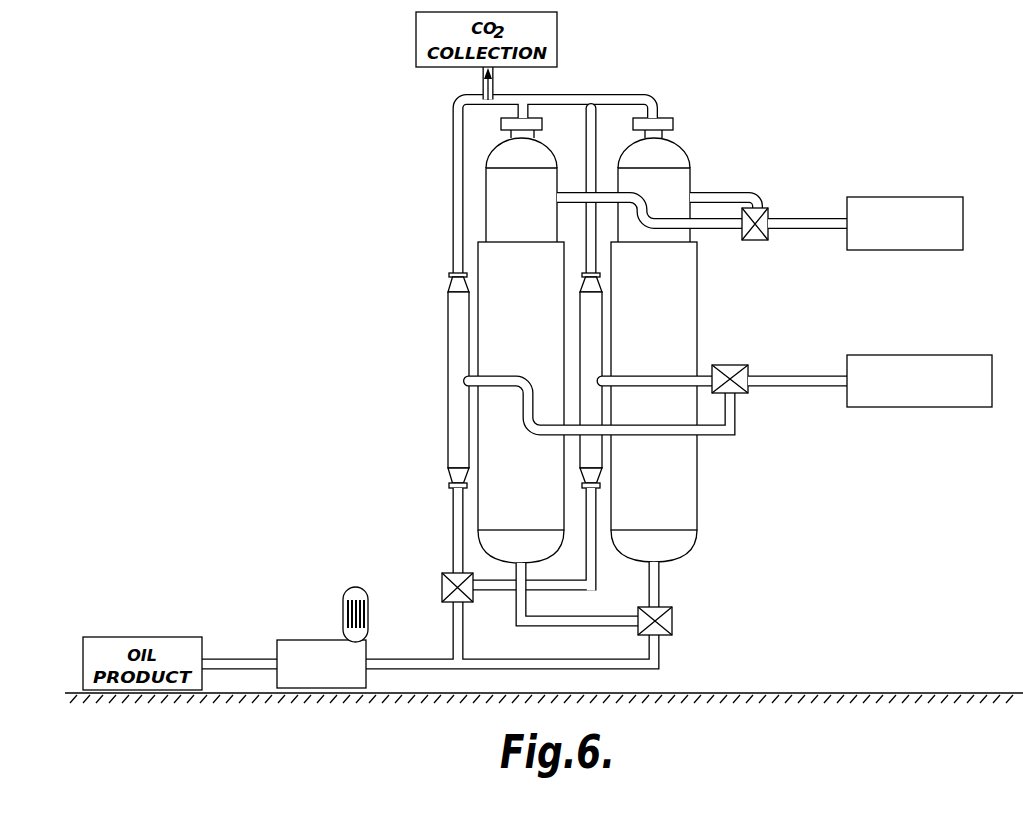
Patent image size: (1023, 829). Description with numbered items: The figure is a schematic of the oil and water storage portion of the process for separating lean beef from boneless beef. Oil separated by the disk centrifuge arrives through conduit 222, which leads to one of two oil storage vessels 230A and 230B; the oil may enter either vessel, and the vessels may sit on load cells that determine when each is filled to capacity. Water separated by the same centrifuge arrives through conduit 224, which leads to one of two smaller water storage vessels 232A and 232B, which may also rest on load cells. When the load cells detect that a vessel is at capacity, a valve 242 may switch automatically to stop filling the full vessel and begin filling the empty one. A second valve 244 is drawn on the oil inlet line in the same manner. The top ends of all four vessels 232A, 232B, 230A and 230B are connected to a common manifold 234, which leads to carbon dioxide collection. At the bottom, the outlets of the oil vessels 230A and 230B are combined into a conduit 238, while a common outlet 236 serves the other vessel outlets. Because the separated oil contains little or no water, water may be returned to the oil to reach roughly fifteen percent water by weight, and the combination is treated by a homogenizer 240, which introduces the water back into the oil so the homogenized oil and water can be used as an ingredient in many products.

The conduit 222 is at (808, 212).
The conduit 224 is at (797, 372).
The oil storage vessel 230A is at (697, 287).
The oil storage vessel 230B is at (480, 260).
The water storage vessel 232A is at (598, 302).
The water storage vessel 232B is at (449, 331).
The common manifold 234 is at (607, 95).
The common outlet 236 is at (465, 633).
The conduit 238 is at (662, 647).
The homogenizer 240 is at (312, 640).
The valve 242 is at (730, 363).
The oil inlet valve 244 is at (760, 207).